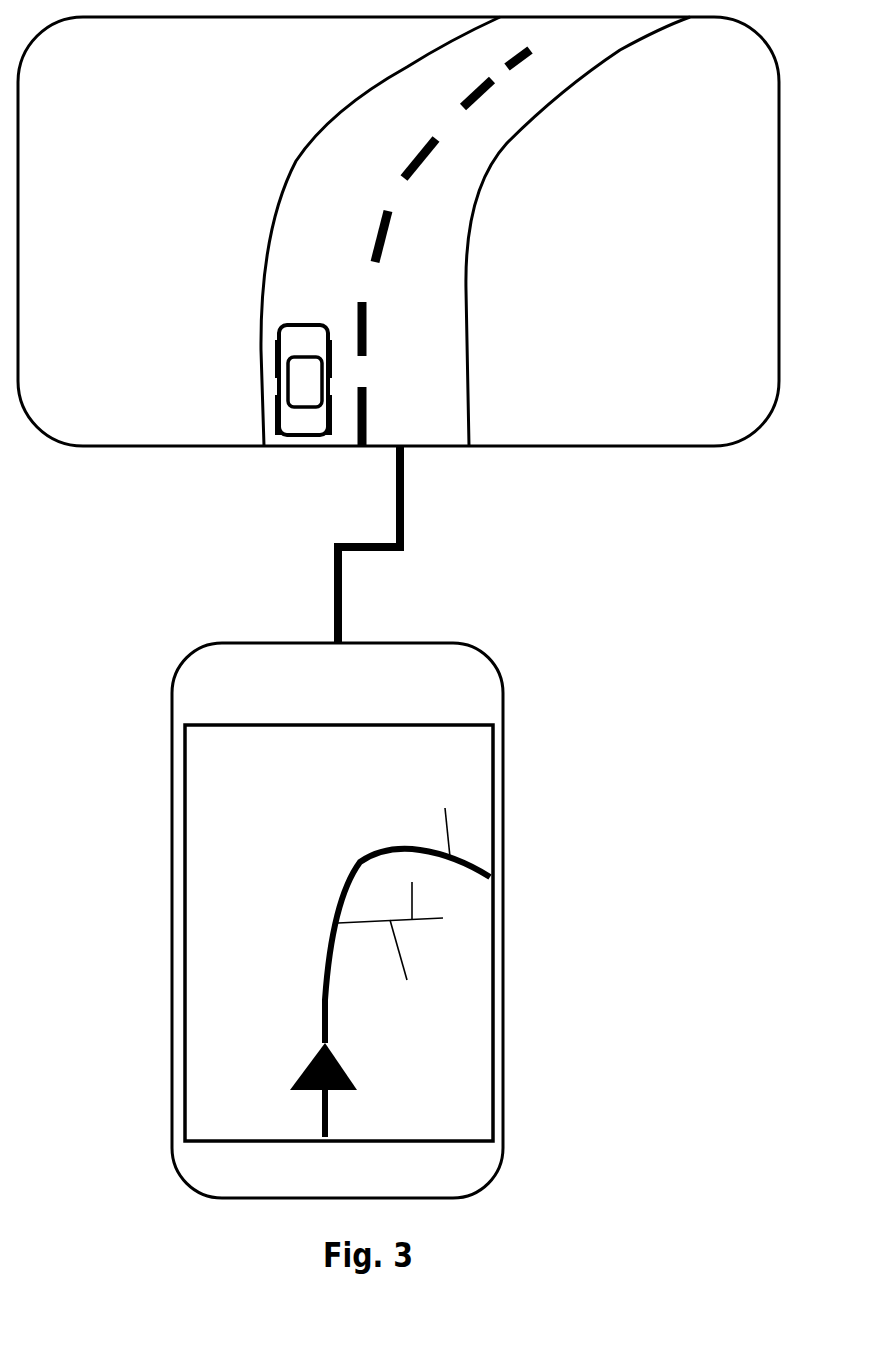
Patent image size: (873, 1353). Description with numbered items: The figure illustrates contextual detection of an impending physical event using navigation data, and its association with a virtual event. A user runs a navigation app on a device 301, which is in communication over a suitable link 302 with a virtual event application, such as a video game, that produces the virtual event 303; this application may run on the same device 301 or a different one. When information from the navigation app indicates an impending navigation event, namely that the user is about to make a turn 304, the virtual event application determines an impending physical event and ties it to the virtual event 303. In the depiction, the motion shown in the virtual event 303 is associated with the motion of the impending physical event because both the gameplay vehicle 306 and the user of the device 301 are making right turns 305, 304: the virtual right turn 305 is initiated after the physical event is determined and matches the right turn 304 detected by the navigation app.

The device 301 is at (503, 680).
The link 302 is at (400, 508).
The virtual event 303 is at (750, 428).
The turn 304 is at (342, 888).
The right turn in the virtual event 305 is at (488, 176).
The gameplay vehicle 306 is at (277, 365).